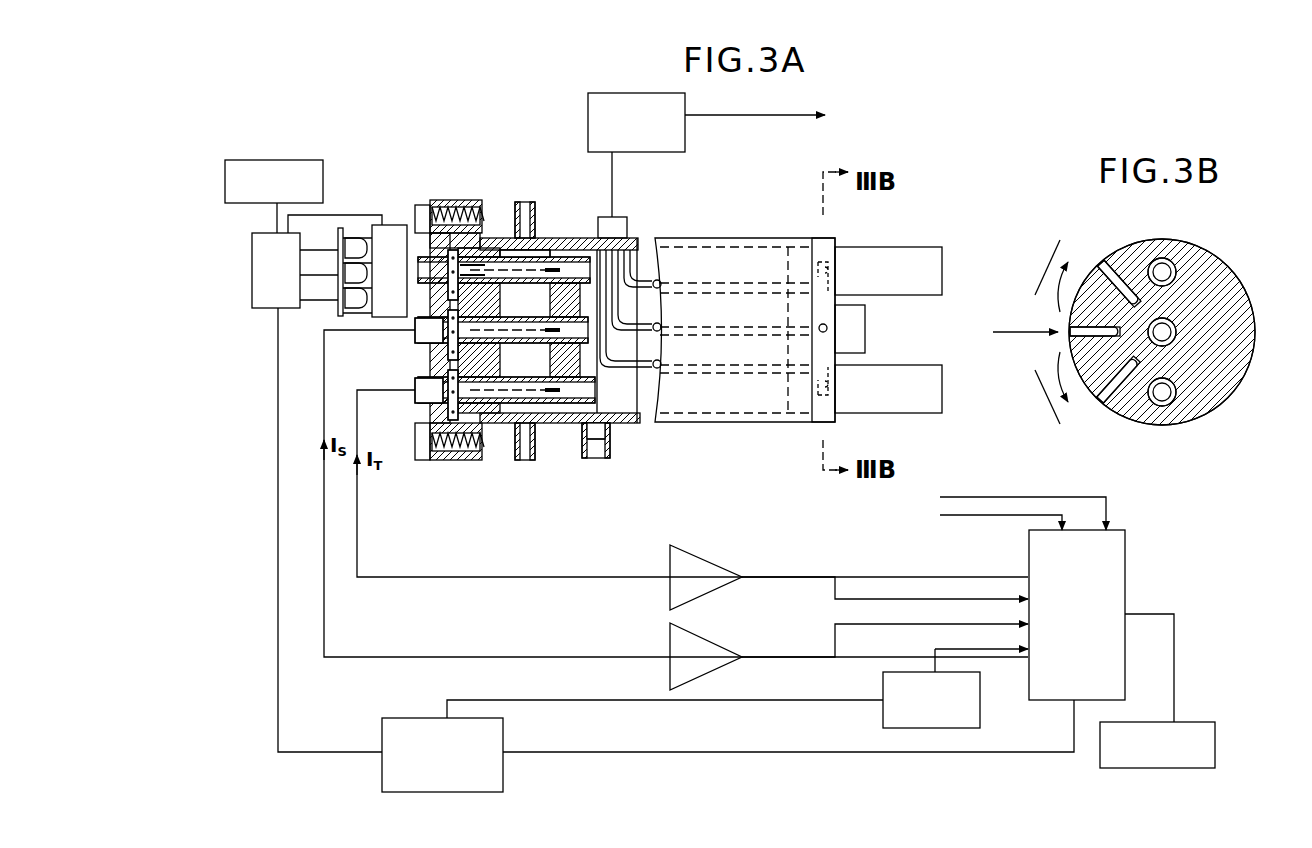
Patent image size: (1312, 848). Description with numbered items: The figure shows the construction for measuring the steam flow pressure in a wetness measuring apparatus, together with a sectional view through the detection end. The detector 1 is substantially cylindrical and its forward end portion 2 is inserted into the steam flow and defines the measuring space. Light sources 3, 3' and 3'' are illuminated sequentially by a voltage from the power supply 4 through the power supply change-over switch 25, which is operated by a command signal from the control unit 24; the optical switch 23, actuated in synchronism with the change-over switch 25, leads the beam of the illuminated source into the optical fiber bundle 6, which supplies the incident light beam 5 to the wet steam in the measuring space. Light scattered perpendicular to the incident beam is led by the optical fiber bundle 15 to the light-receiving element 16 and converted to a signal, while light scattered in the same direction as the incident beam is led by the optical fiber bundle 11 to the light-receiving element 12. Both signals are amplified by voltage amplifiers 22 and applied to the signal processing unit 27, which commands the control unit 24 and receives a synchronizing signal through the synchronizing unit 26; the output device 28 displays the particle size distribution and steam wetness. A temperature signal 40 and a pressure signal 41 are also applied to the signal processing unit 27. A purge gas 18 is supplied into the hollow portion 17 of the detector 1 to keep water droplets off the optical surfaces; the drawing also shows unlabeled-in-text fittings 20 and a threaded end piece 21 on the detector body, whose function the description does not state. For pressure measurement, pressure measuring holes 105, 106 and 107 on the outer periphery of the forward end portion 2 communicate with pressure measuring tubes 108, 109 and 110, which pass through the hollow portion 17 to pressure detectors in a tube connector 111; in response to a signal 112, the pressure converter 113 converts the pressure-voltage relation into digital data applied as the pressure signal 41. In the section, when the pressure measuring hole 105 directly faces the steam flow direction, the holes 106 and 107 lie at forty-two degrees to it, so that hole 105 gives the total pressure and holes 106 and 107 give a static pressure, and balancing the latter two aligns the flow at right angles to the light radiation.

In FIG. 3A, the detector 1 is at (746, 238).
In FIG. 3A, the forward end portion 2 is at (828, 242).
In FIG. 3A, the light source 3 is at (335, 256).
In FIG. 3A, the light source 3' is at (335, 282).
In FIG. 3A, the light source 3'' is at (334, 309).
In FIG. 3A, the power supply 4 is at (324, 173).
In FIG. 3A, the incident light beam 5 is at (551, 262).
In FIG. 3B, the optical fiber bundle 6 is at (1165, 265).
In FIG. 3B, the optical fiber bundle 11 is at (1166, 388).
In FIG. 3A, the light-receiving element 12 is at (412, 398).
In FIG. 3B, the optical fiber bundle 15 is at (1176, 335).
In FIG. 3A, the light-receiving element 16 is at (412, 338).
In FIG. 3A, the hollow portion 17 is at (632, 418).
In FIG. 3A, the purge gas 18 is at (596, 472).
In FIG. 3A, the fluid pipes 20 is at (525, 170).
In FIG. 3A, the screw cap 21 is at (512, 365).
In FIG. 3A, the voltage amplifier 22 is at (712, 560).
In FIG. 3A, the optical switch 23 is at (390, 225).
In FIG. 3A, the control unit 24 is at (504, 778).
In FIG. 3A, the power supply change-over switch 25 is at (262, 308).
In FIG. 3A, the synchronizing unit 26 is at (980, 718).
In FIG. 3A, the signal processing unit 27 is at (1126, 545).
In FIG. 3A, the output device 28 is at (1190, 720).
In FIG. 3A, the temperature signal 40 is at (963, 492).
In FIG. 3A, the pressure signal 41 is at (762, 118).
In FIG. 3A, the pressure measuring hole 105 is at (827, 328).
In FIG. 3B, the pressure measuring hole 105 is at (1052, 330).
In FIG. 3A, the pressure measuring hole 106 is at (826, 268).
In FIG. 3B, the pressure measuring hole 106 is at (1098, 258).
In FIG. 3A, the pressure measuring hole 107 is at (826, 394).
In FIG. 3B, the pressure measuring hole 107 is at (1094, 396).
In FIG. 3A, the pressure measuring tube 108 is at (640, 330).
In FIG. 3A, the pressure measuring tube 109 is at (640, 242).
In FIG. 3A, the pressure measuring tube 110 is at (640, 375).
In FIG. 3A, the tube connector 111 is at (638, 205).
In FIG. 3A, the signal 112 is at (609, 174).
In FIG. 3A, the pressure converter 113 is at (672, 152).